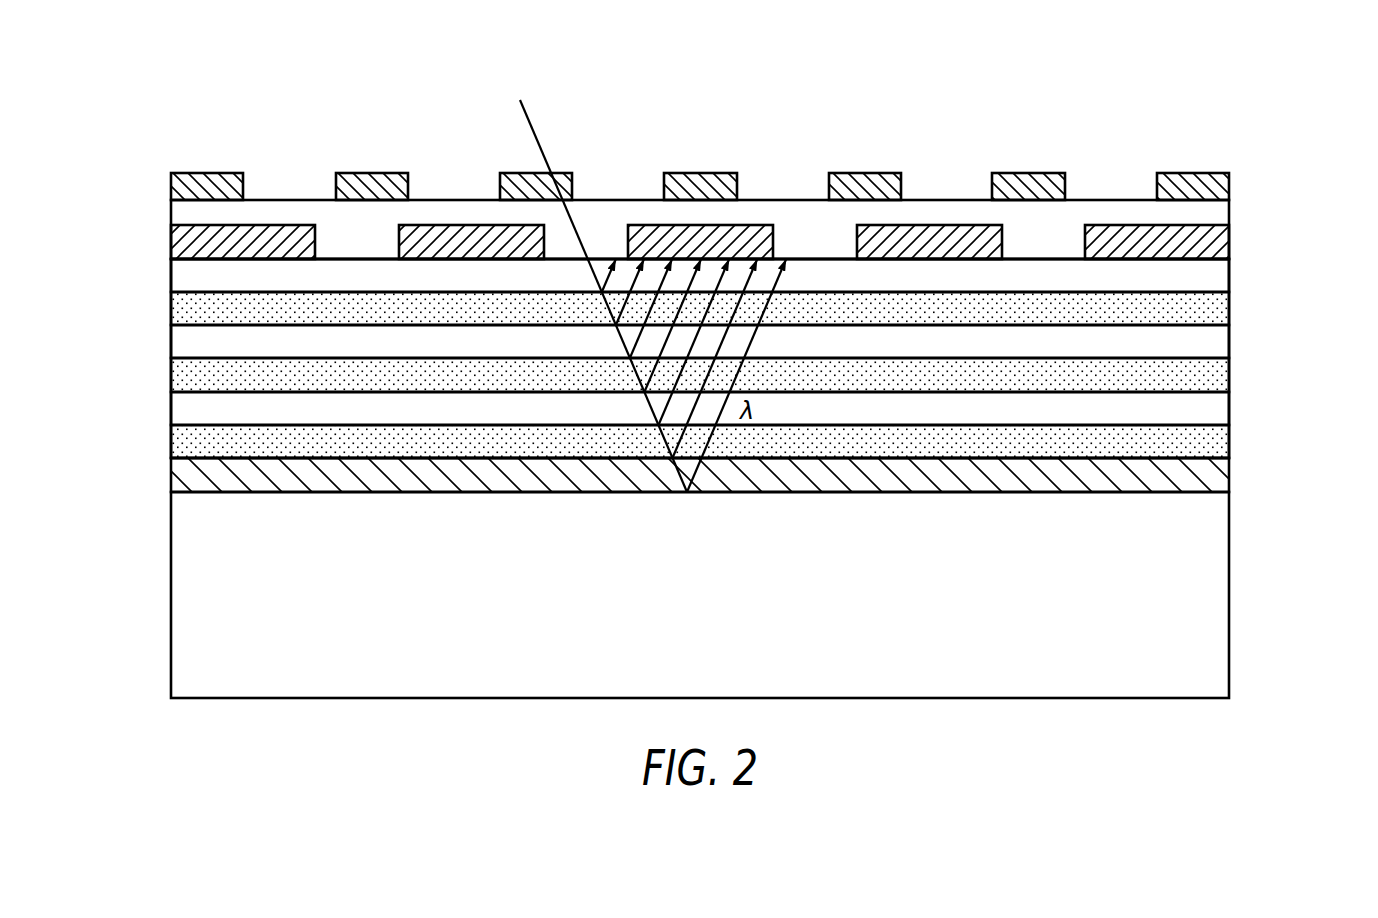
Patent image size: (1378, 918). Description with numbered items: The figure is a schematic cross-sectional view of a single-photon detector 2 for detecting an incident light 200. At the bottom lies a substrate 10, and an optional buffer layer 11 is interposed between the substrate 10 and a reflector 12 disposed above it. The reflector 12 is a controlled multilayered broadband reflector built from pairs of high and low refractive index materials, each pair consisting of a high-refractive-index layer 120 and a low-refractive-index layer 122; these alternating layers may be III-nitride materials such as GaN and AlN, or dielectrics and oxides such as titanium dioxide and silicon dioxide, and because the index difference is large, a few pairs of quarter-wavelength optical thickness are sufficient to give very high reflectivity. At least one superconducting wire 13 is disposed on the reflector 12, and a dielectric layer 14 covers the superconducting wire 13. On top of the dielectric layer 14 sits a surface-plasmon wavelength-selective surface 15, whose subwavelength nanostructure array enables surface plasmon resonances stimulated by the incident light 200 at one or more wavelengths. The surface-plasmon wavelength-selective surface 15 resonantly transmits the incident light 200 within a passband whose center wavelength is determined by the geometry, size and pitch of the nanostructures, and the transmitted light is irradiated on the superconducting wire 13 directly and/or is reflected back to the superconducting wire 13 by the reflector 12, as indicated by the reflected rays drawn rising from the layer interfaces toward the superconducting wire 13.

The single-photon detector 2 is at (1318, 104).
The substrate 10 is at (1231, 588).
The buffer layer 11 is at (1231, 478).
The reflector 12 is at (1233, 258).
The superconducting wire 13 is at (1231, 246).
The dielectric layer 14 is at (1231, 216).
The surface-plasmon wavelength-selective surface 15 is at (1231, 188).
The high-refractive-index layer 120 is at (170, 274).
The low-refractive-index layer 122 is at (170, 307).
The incident light 200 is at (641, 281).